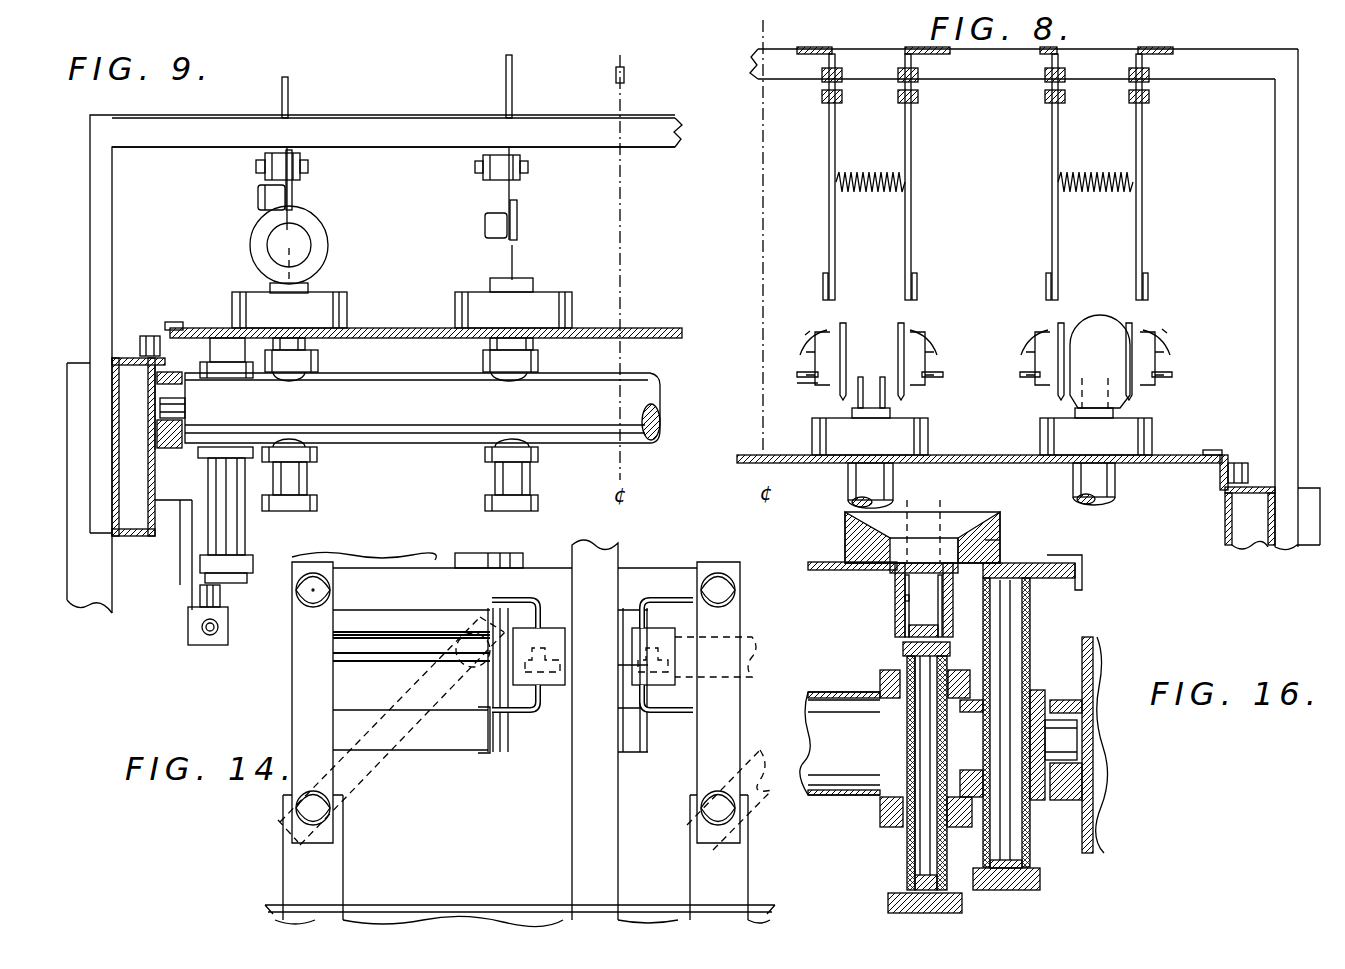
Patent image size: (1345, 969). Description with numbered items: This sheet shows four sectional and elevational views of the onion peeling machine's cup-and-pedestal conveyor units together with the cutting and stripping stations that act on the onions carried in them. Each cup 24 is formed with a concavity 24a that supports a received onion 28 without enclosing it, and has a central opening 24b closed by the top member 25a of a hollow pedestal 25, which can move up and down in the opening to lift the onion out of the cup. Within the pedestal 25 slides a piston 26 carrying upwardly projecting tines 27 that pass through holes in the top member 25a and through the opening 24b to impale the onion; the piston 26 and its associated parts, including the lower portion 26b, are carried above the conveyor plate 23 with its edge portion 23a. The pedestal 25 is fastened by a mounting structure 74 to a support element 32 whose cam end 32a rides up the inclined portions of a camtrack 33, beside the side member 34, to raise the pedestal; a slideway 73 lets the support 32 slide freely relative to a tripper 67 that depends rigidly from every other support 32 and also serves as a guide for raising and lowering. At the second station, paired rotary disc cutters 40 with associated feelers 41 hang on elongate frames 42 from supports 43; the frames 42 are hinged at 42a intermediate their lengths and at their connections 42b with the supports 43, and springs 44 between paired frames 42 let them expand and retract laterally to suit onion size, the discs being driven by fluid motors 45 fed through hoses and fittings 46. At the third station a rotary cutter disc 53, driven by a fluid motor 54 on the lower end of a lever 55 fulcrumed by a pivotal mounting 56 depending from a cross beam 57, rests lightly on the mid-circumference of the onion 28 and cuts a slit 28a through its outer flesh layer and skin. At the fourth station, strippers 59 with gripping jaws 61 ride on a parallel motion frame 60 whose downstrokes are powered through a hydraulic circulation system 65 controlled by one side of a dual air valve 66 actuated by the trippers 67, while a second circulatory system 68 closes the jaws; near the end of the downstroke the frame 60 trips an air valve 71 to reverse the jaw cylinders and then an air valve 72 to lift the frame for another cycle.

In FIG. 9, the base plate 23 is at (410, 324).
In FIG. 8, the base plate 23 is at (1173, 455).
In FIG. 16, the base plate 23 is at (824, 570).
In FIG. 14, the base plate 23 is at (480, 880).
In FIG. 9, the clip 23a is at (151, 335).
In FIG. 8, the clip 23a is at (1238, 461).
In FIG. 9, the cup 24 is at (454, 299).
In FIG. 8, the cup 24 is at (1040, 440).
In FIG. 16, the cup 24 is at (847, 540).
In FIG. 16, the concavity 24a is at (972, 530).
In FIG. 16, the central opening 24b is at (923, 523).
In FIG. 9, the hollow element (pedestal) 25 is at (488, 341).
In FIG. 8, the hollow element (pedestal) 25 is at (1032, 468).
In FIG. 16, the hollow element (pedestal) 25 is at (895, 620).
In FIG. 16, the top member 25a is at (1000, 540).
In FIG. 9, the piston 26 is at (495, 477).
In FIG. 16, the piston 26 is at (905, 670).
In FIG. 9, the foot 26b is at (486, 503).
In FIG. 16, the foot 26b is at (900, 902).
In FIG. 9, the tines 27 is at (514, 258).
In FIG. 8, the tines 27 is at (880, 405).
In FIG. 16, the tines 27 is at (938, 596).
In FIG. 9, the onion 28 is at (326, 241).
In FIG. 8, the onion 28 is at (1128, 396).
In FIG. 9, the slit 28a is at (281, 221).
In FIG. 9, the support element 32 is at (410, 390).
In FIG. 16, the support element 32 is at (845, 795).
In FIG. 9, the cam end 32a is at (200, 410).
In FIG. 16, the cam end 32a is at (1088, 756).
In FIG. 9, the camtrack 33 is at (158, 390).
In FIG. 16, the camtrack 33 is at (1078, 741).
In FIG. 9, the side wall 34 is at (113, 444).
In FIG. 16, the side wall 34 is at (1096, 662).
In FIG. 8, the rotary disc cutter 40 is at (898, 346).
In FIG. 8, the feeler 41 is at (804, 334).
In FIG. 8, the elongate frame 42 is at (904, 238).
In FIG. 8, the hinge 42a is at (912, 288).
In FIG. 8, the connection 42b is at (822, 89).
In FIG. 8, the support 43 is at (905, 56).
In FIG. 8, the spring 44 is at (876, 172).
In FIG. 8, the fluid motor 45 is at (815, 365).
In FIG. 8, the hoses and fittings 46 is at (804, 384).
In FIG. 9, the rotary cutter disc 53 is at (292, 190).
In FIG. 9, the fluid motor 54 is at (262, 196).
In FIG. 9, the lever 55 is at (288, 96).
In FIG. 9, the pivotal mounting 56 is at (256, 170).
In FIG. 9, the cross beam 57 is at (404, 132).
In FIG. 14, the stripper 59 is at (376, 648).
In FIG. 14, the parallel motion frame 60 is at (447, 585).
In FIG. 14, the gripping jaw 61 is at (476, 750).
In FIG. 14, the circulation system 65 is at (500, 598).
In FIG. 9, the dual air valve 66 is at (201, 627).
In FIG. 9, the tripper 67 is at (246, 568).
In FIG. 16, the tripper 67 is at (1040, 882).
In FIG. 14, the circulatory system 68 is at (667, 598).
In FIG. 14, the air valve 71 is at (620, 677).
In FIG. 14, the air valve 72 is at (545, 664).
In FIG. 9, the slideway 73 is at (202, 364).
In FIG. 16, the slideway 73 is at (1038, 690).
In FIG. 9, the mounting structure 74 is at (318, 360).
In FIG. 16, the mounting structure 74 is at (880, 680).